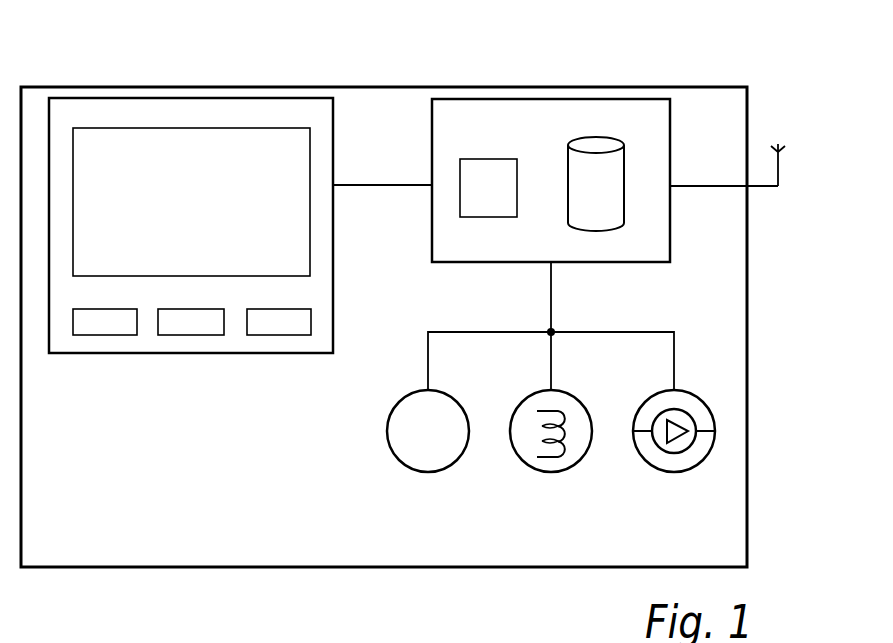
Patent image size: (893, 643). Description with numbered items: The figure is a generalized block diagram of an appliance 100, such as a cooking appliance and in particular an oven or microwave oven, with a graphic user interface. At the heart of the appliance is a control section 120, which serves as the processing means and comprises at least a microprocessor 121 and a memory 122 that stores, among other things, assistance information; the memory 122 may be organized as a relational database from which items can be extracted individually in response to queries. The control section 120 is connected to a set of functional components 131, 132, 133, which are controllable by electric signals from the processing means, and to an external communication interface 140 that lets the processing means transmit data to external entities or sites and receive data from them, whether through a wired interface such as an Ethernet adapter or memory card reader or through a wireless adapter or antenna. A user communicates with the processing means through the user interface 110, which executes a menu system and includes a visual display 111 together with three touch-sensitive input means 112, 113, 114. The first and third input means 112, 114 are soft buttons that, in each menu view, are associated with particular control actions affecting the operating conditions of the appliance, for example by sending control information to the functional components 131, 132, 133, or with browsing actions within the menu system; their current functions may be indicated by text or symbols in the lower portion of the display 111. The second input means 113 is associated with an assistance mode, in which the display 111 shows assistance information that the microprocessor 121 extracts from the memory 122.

The appliance 100 is at (572, 606).
The user interface 110 is at (90, 98).
The visual display 111 is at (191, 202).
The first input means 112 is at (92, 375).
The second touch-sensitive input means 113 is at (186, 375).
The third input means 114 is at (281, 375).
The control section 120 is at (531, 99).
The microprocessor 121 is at (493, 159).
The memory 122 is at (598, 145).
The functional component 131 is at (424, 500).
The functional component 132 is at (555, 498).
The functional component 133 is at (677, 498).
The external communication interface 140 is at (806, 180).